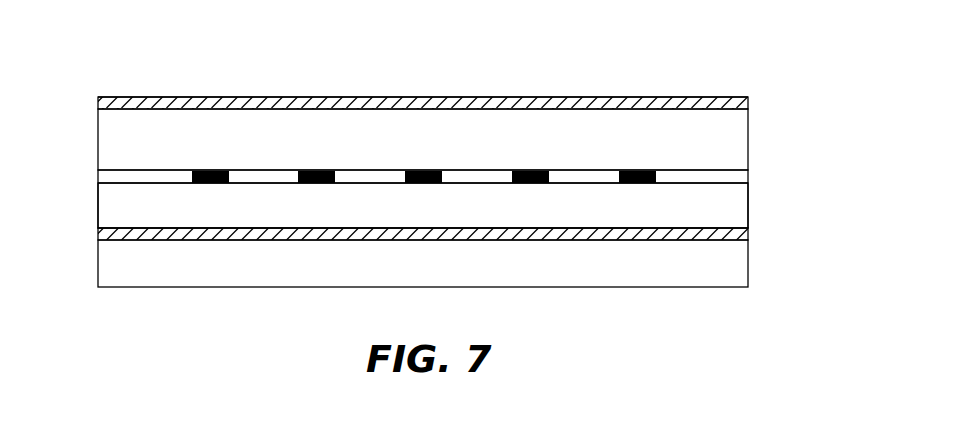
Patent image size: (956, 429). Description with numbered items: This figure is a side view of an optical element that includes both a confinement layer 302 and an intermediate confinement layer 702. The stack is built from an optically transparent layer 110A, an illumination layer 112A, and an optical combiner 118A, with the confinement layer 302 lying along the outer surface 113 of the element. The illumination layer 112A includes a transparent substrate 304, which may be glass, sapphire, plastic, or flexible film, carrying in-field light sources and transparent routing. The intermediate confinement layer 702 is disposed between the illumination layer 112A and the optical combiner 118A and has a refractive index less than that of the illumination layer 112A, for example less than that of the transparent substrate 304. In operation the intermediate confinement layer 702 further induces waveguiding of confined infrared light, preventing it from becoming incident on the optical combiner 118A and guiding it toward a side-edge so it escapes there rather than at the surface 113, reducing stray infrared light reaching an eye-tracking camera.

The surface 113 is at (133, 108).
The confinement layer 302 is at (747, 101).
The optically transparent layer 110A is at (739, 145).
The illumination layer 112A is at (748, 172).
The transparent substrate 304 is at (108, 200).
The intermediate confinement layer 702 is at (100, 237).
The optical combiner 118A is at (737, 263).